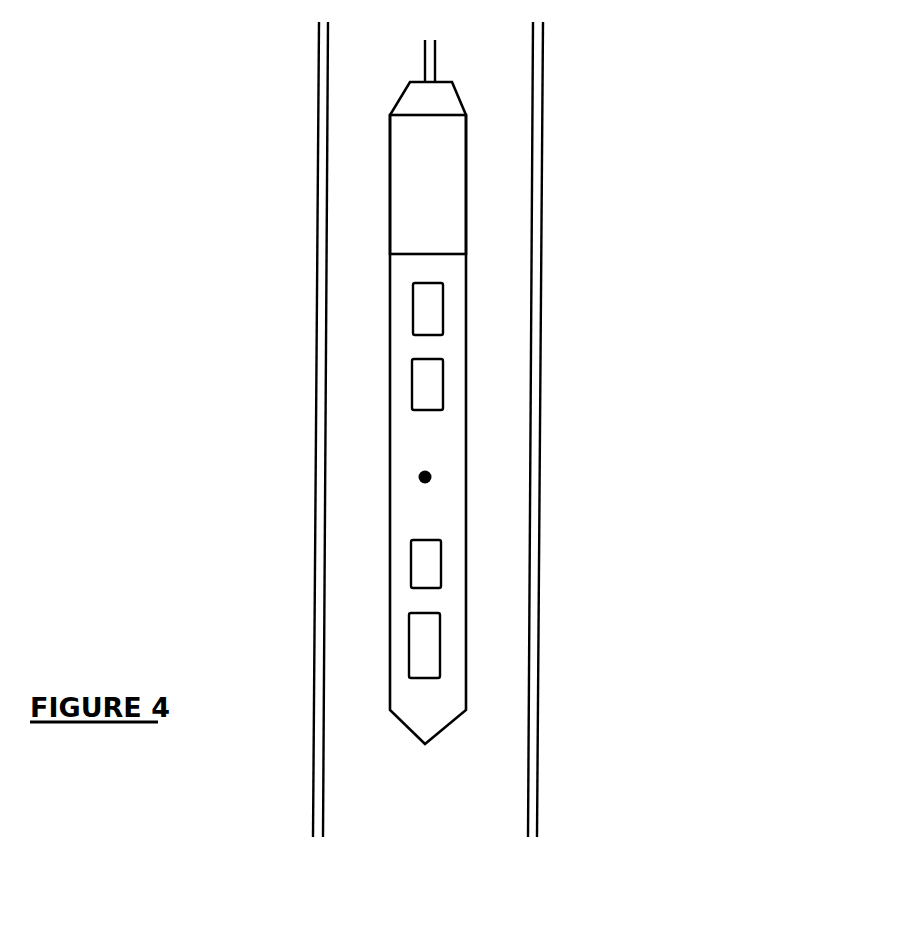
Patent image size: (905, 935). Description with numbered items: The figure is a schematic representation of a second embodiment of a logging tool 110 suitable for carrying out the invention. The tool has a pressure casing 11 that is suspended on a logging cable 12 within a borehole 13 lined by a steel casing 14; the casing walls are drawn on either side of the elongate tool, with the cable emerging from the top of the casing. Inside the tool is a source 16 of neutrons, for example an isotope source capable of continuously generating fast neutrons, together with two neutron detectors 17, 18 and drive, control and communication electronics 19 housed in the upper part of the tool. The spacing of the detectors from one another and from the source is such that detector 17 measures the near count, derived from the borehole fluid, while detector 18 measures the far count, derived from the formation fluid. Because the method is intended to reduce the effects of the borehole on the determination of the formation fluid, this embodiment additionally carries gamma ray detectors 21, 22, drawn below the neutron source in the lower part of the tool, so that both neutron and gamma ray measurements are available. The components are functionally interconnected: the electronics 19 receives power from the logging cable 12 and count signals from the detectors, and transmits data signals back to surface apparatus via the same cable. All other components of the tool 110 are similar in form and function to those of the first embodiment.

The pressure casing 11 is at (375, 413).
The logging cable 12 is at (435, 63).
The borehole 13 is at (505, 352).
The steel casing 14 is at (543, 473).
The source of neutrons 16 is at (419, 478).
The neutron detector 17 is at (423, 386).
The neutron detector 18 is at (423, 310).
The drive, control and communication electronics 19 is at (443, 186).
The gamma ray detector 21 is at (427, 567).
The gamma ray detector 22 is at (425, 647).
The logging tool 110 is at (482, 297).